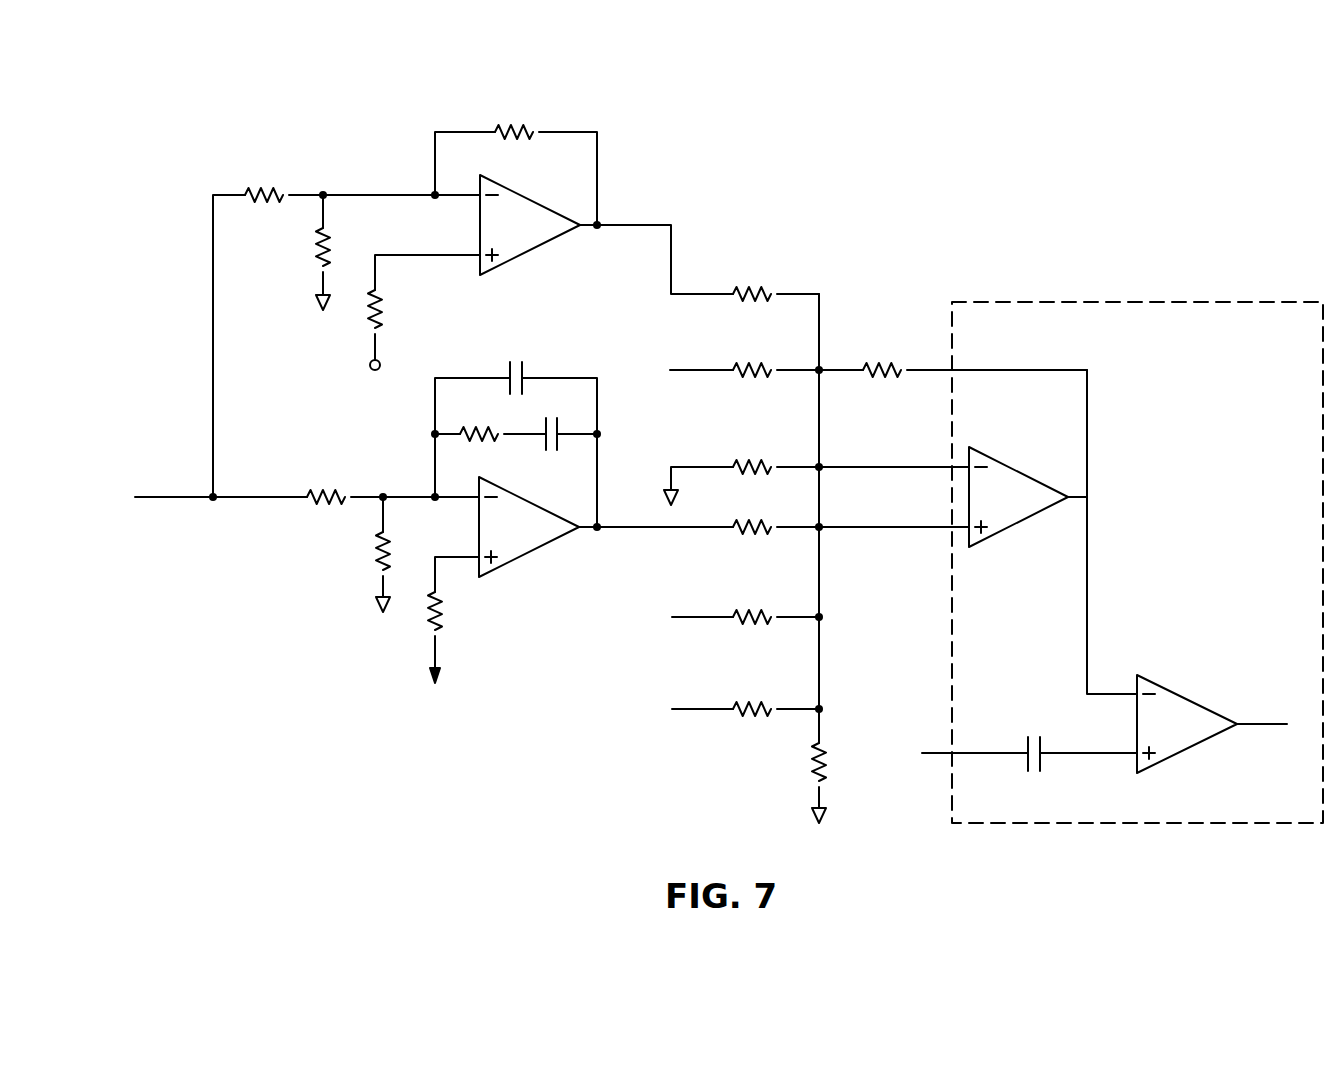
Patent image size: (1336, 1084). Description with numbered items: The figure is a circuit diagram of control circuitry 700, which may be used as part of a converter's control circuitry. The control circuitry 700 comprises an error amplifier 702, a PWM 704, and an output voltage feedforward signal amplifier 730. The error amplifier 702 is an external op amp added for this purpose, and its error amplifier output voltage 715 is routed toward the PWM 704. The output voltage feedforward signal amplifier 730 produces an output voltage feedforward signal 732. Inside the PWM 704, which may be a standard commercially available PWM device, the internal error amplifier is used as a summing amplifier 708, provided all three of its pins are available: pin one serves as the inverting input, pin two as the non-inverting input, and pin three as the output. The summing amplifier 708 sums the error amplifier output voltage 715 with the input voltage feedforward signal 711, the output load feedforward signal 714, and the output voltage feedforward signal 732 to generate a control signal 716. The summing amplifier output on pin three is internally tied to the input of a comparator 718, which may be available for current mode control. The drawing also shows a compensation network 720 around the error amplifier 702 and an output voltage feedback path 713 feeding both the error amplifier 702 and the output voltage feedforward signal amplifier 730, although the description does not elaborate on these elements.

The control circuitry 700 is at (508, 807).
The error amplifier 702 is at (530, 498).
The PWM 704 is at (1137, 301).
The summing amplifier 708 is at (1020, 468).
The input voltage feedforward signal 711 is at (702, 369).
The VOUT feedback line 713 is at (158, 492).
The output load feedforward signal 714 is at (702, 616).
The error amplifier output voltage 715 is at (650, 531).
The control signal 716 is at (1088, 592).
The comparator 718 is at (1188, 696).
The compensation network 720 is at (459, 367).
The output voltage feedforward signal amplifier 730 is at (530, 198).
The output voltage feedforward signal 732 is at (702, 293).